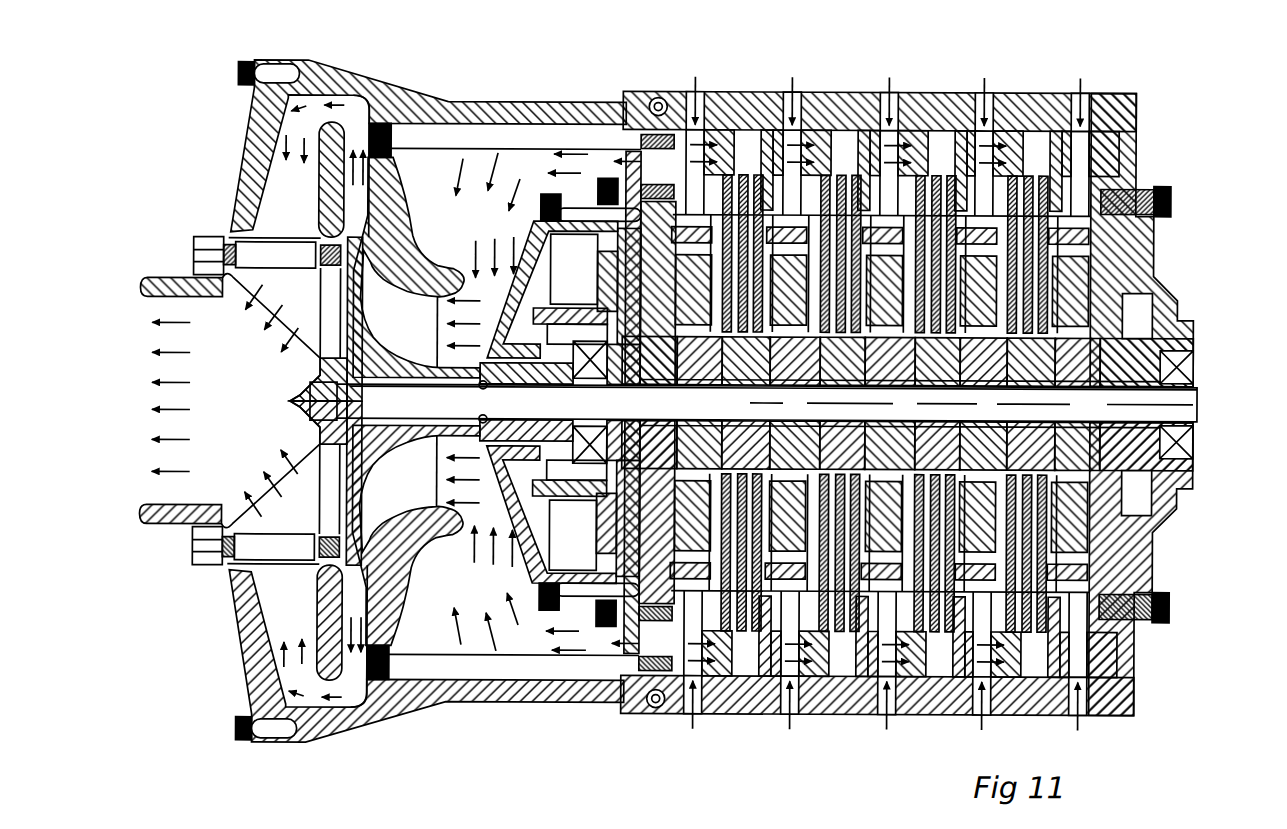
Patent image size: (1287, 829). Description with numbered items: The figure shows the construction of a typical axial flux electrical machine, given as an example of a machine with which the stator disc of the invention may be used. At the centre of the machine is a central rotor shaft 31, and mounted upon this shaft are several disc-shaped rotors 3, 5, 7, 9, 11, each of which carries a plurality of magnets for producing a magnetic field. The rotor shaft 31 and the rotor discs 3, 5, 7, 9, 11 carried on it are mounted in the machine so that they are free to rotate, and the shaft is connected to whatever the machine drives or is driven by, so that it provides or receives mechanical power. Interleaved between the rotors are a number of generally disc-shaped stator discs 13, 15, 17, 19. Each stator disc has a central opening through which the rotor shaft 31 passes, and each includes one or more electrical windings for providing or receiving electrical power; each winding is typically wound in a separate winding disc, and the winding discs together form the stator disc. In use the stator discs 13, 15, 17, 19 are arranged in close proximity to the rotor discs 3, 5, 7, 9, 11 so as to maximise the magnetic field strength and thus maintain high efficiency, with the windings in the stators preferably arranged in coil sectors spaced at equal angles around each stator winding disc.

The rotor disc 3 is at (678, 327).
The rotor disc 5 is at (780, 327).
The rotor disc 7 is at (887, 327).
The rotor disc 9 is at (977, 327).
The rotor disc 11 is at (1073, 327).
The stator disc 13 is at (727, 91).
The stator disc 15 is at (823, 91).
The stator disc 17 is at (917, 91).
The stator disc 19 is at (1010, 91).
The rotor shaft 31 is at (1187, 398).